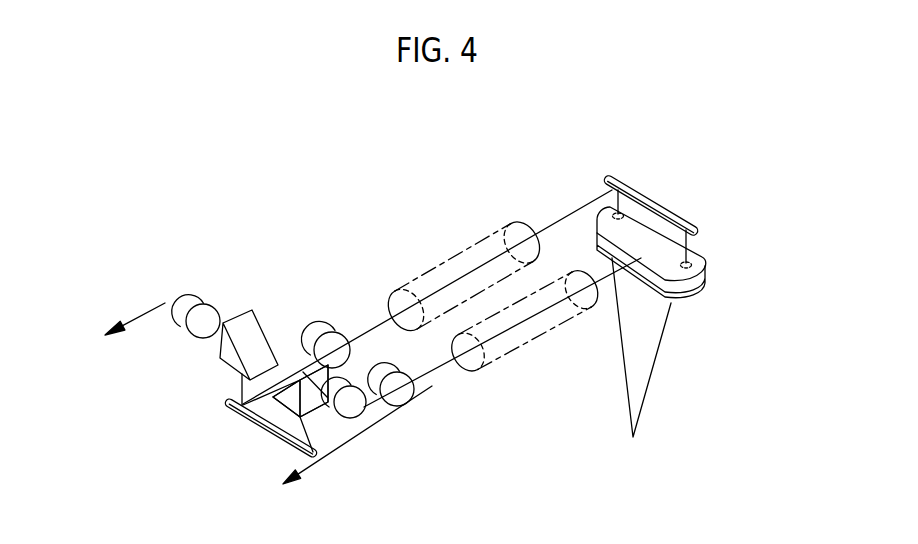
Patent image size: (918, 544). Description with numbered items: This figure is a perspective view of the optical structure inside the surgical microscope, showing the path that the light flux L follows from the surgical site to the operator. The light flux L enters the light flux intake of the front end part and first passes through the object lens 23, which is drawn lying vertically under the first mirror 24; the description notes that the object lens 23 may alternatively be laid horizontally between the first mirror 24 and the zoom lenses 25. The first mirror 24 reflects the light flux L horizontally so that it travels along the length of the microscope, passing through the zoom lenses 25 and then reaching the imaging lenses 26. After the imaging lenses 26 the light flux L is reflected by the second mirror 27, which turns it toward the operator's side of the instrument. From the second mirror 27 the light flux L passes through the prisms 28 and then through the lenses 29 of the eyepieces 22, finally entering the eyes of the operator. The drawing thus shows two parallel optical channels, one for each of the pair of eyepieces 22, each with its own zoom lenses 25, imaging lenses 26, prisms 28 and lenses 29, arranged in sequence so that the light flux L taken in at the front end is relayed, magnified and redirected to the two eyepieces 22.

The eyepieces 22 is at (198, 250).
The object lens 23 is at (678, 302).
The first mirror 24 is at (656, 205).
The zoom lenses 25 is at (452, 262).
The imaging lenses 26 is at (336, 331).
The second mirror 27 is at (262, 442).
The prisms 28 is at (267, 322).
The lenses 29 is at (203, 323).
The light flux L is at (658, 353).